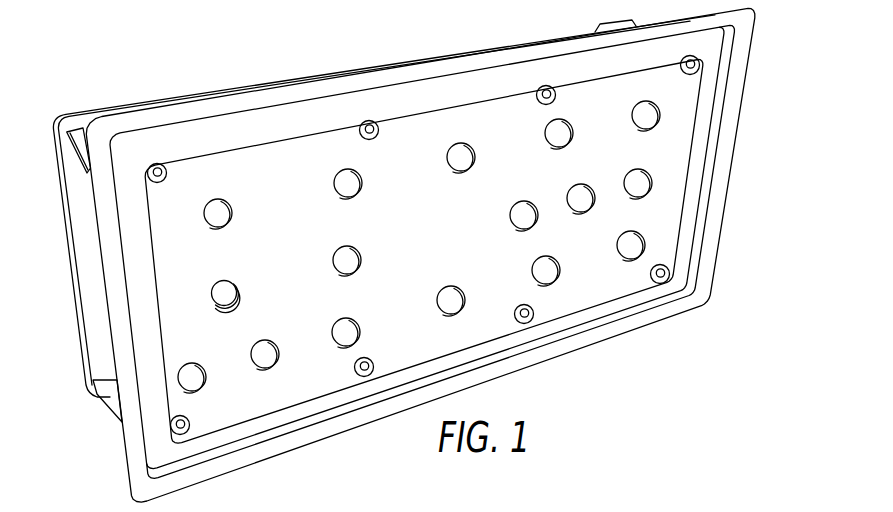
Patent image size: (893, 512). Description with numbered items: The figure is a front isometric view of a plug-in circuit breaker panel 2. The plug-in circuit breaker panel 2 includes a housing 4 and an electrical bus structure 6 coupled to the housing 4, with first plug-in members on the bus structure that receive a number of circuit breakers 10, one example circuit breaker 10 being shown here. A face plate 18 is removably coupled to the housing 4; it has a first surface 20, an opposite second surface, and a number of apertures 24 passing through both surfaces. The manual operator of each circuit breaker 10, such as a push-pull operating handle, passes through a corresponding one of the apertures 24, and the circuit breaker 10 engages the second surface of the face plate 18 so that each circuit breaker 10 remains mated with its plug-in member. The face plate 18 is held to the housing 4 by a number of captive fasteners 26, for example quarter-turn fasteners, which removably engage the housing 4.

The plug-in circuit breaker panel 2 is at (507, 34).
The housing 4 is at (266, 128).
The electrical bus structure 6 is at (84, 361).
The circuit breaker 10 is at (246, 304).
The face plate 18 is at (274, 398).
The first surface 20 is at (572, 299).
The apertures 24 is at (571, 188).
The captive fasteners 26 is at (700, 69).